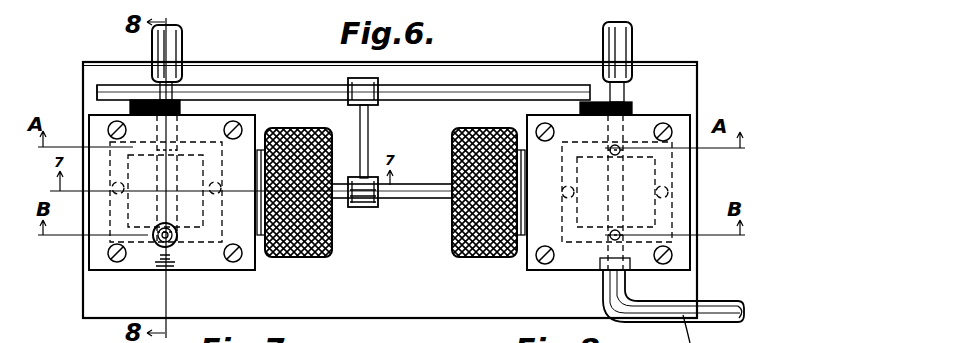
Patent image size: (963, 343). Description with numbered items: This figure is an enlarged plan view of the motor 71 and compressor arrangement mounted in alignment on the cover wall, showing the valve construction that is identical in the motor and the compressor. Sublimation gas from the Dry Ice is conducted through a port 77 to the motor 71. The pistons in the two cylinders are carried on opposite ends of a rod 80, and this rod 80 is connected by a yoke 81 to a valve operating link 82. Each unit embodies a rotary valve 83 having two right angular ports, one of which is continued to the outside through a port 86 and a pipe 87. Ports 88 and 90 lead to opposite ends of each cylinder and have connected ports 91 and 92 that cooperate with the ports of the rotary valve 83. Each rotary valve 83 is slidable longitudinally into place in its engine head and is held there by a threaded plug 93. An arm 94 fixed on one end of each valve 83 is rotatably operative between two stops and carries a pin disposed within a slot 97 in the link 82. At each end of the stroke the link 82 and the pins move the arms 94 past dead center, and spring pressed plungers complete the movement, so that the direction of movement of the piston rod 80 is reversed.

The motor 71 is at (265, 273).
The port 77 is at (160, 250).
The rod 80 is at (425, 199).
The yoke 81 is at (364, 136).
The valve operating link 82 is at (433, 90).
The rotary valve 83 is at (172, 184).
The port 86 is at (185, 58).
The pipe 87 is at (183, 43).
The port 88 is at (130, 197).
The port 90 is at (219, 201).
The connected port 91 is at (135, 146).
The connected port 92 is at (180, 147).
The threaded plug 93 is at (176, 268).
The arm 94 is at (172, 100).
The slot 97 is at (113, 88).